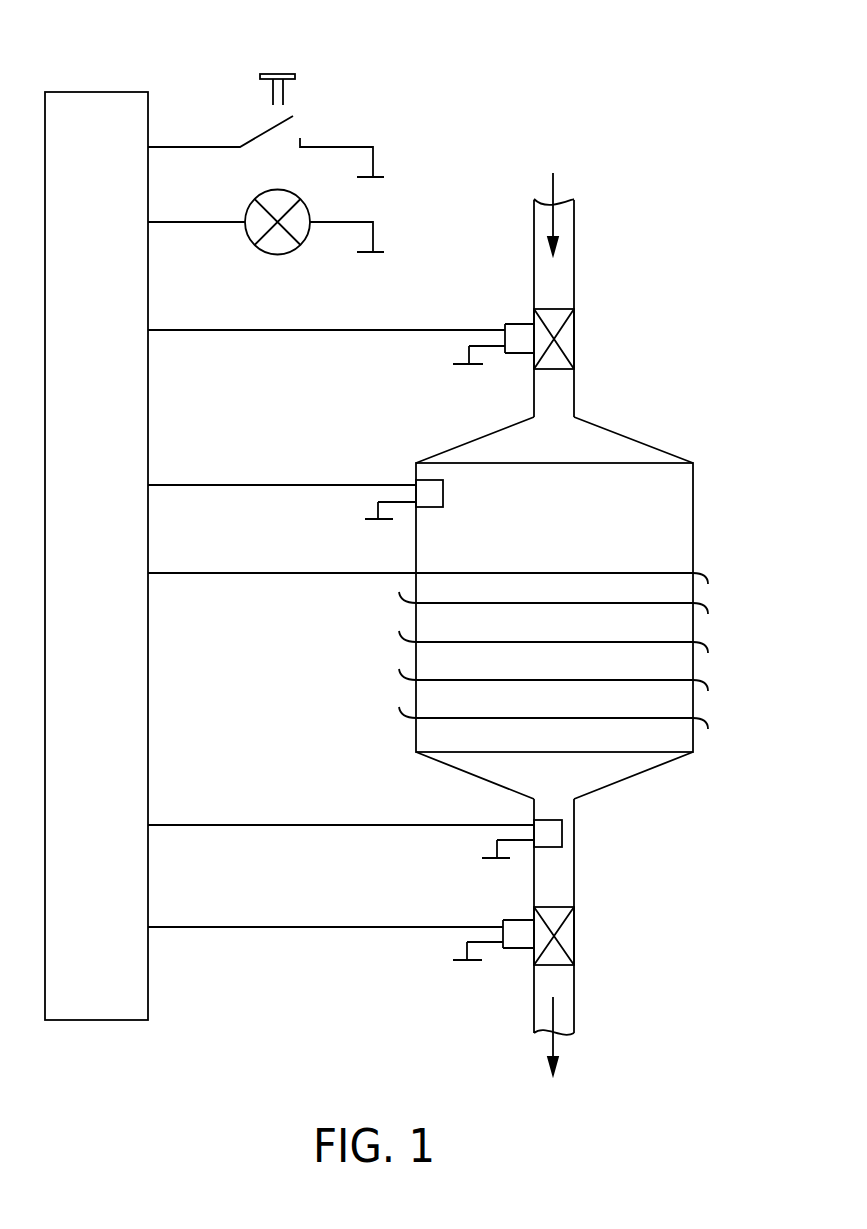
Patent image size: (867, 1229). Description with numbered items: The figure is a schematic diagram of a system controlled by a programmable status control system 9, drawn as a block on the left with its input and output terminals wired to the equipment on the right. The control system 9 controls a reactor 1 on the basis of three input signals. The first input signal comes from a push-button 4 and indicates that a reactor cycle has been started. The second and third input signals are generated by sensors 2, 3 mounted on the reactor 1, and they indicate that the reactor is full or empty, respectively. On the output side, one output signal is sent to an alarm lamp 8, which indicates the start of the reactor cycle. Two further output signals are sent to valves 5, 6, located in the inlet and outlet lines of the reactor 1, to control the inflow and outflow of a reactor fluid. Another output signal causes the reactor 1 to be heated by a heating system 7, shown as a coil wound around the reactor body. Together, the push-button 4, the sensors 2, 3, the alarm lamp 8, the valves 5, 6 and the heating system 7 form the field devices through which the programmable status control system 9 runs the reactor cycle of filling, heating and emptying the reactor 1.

The reactor 1 is at (689, 486).
The sensor 2 is at (415, 475).
The sensor 3 is at (542, 834).
The push-button 4 is at (255, 133).
The valve 5 is at (507, 327).
The valve 6 is at (527, 940).
The heating system 7 is at (682, 573).
The alarm lamp 8 is at (275, 247).
The programmable status control system 9 is at (132, 992).